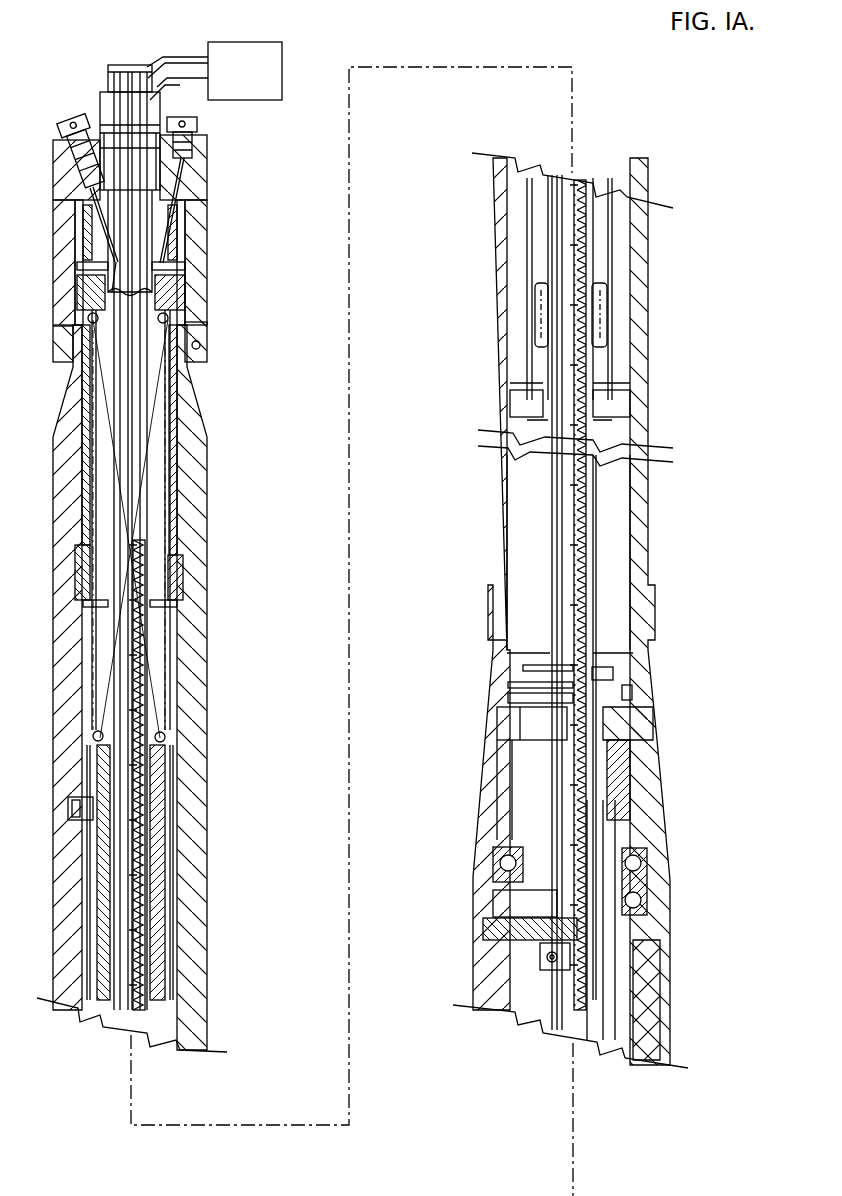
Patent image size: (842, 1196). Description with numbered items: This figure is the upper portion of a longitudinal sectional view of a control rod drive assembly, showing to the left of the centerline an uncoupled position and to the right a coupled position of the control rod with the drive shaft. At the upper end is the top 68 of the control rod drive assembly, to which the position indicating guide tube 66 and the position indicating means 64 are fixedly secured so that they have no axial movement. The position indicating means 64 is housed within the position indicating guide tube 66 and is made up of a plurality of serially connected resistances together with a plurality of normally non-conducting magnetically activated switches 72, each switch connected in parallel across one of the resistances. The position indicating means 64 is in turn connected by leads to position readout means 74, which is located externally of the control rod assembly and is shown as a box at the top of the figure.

The position indicating means 64 is at (692, 312).
The position indicating guide tube 66 is at (545, 256).
The top of the control rod drive assembly 68 is at (32, 178).
The magnetically activated switch 72 is at (583, 488).
The position readout means 74 is at (244, 42).